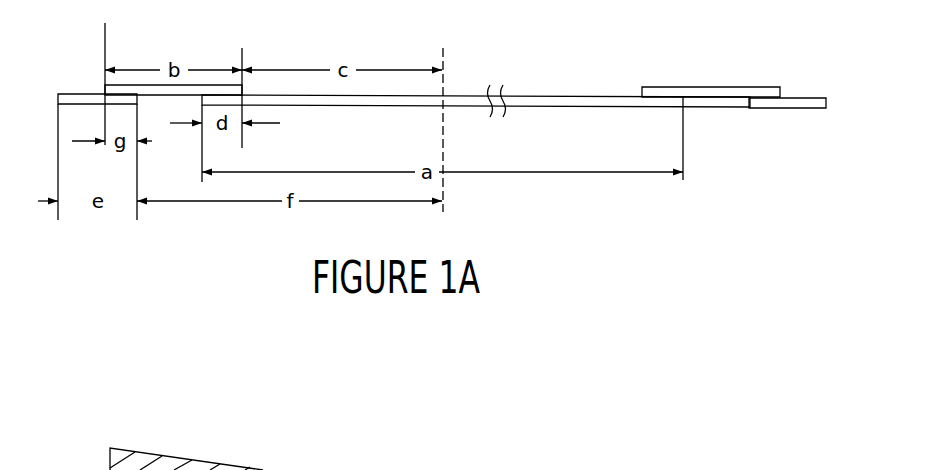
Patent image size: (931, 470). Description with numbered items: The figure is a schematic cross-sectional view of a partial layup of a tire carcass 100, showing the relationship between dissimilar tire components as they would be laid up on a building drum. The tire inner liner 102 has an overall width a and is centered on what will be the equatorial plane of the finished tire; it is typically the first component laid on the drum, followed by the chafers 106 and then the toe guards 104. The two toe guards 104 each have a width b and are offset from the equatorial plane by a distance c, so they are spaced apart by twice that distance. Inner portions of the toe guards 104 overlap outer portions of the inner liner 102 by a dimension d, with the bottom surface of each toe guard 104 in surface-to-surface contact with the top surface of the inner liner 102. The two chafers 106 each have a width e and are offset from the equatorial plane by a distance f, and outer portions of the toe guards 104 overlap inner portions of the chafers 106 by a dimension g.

The tire carcass 100 is at (542, 65).
The tire inner liner 102 is at (380, 96).
The toe guard 104 is at (220, 85).
The chafer 106 is at (95, 94).